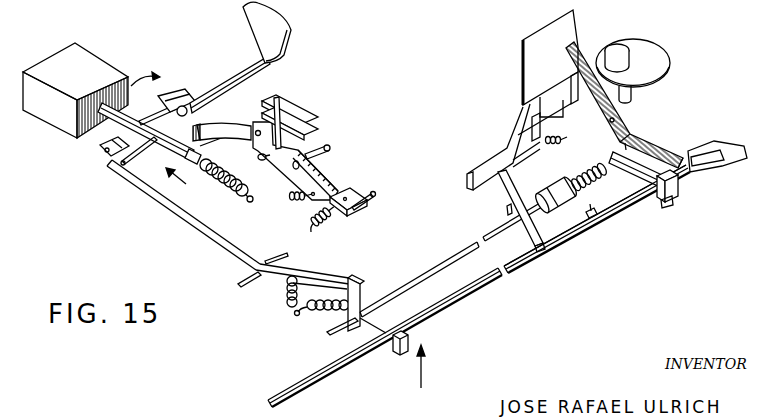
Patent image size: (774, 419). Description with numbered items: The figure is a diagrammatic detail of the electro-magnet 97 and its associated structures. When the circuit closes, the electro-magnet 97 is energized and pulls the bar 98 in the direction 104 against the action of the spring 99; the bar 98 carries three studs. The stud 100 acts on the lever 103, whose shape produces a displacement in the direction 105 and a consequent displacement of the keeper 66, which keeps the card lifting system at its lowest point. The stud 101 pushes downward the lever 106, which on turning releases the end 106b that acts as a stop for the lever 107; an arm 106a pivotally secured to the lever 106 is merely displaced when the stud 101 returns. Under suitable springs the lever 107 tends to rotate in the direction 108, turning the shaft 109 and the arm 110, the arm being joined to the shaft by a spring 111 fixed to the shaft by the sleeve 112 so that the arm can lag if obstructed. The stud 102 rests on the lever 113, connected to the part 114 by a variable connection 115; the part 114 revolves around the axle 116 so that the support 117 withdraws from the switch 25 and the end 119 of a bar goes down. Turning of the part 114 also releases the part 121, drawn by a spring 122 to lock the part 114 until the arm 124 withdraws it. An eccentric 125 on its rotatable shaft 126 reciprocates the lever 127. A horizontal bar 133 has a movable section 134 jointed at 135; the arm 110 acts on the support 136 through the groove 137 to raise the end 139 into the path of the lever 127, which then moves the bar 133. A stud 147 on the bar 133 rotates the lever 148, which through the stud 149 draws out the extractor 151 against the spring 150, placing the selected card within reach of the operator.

The switch 25 is at (291, 110).
The keeper 66 is at (292, 30).
The electro-magnet 97 is at (60, 58).
The bar 98 is at (116, 121).
The spring 99 is at (234, 190).
The stud 100 is at (159, 115).
The stud 101 is at (139, 149).
The stud 102 is at (203, 142).
The lever 103 is at (174, 92).
The direction 104 is at (185, 182).
The direction 105 is at (146, 73).
The lever 106 is at (178, 216).
The arm 106a is at (120, 158).
The end of lever 106b is at (349, 279).
The lever 107 is at (395, 351).
The direction 108 is at (434, 366).
The shaft 109 is at (418, 277).
The arm 110 is at (623, 174).
The spring 111 is at (588, 169).
The sleeve 112 is at (549, 186).
The lever 113 is at (213, 128).
The part 114 is at (324, 180).
The variable connection 115 is at (259, 162).
The axle 116 is at (320, 145).
The support 117 is at (277, 108).
The end of bar 119 is at (255, 124).
The part 121 is at (353, 199).
The spring 122 is at (318, 222).
The arm 124 is at (375, 204).
The eccentric 125 is at (667, 58).
The rotatable shaft 126 is at (618, 45).
The lever 127 is at (659, 150).
The bar 133 is at (296, 393).
The movable section 134 is at (634, 199).
The joint 135 is at (593, 219).
The support 136 is at (680, 188).
The groove 137 is at (669, 197).
The end of movable section 139 is at (733, 162).
The stud 147 is at (527, 252).
The lever 148 is at (531, 222).
The stud 149 is at (491, 184).
The spring 150 is at (565, 138).
The extractor 151 is at (366, 358).